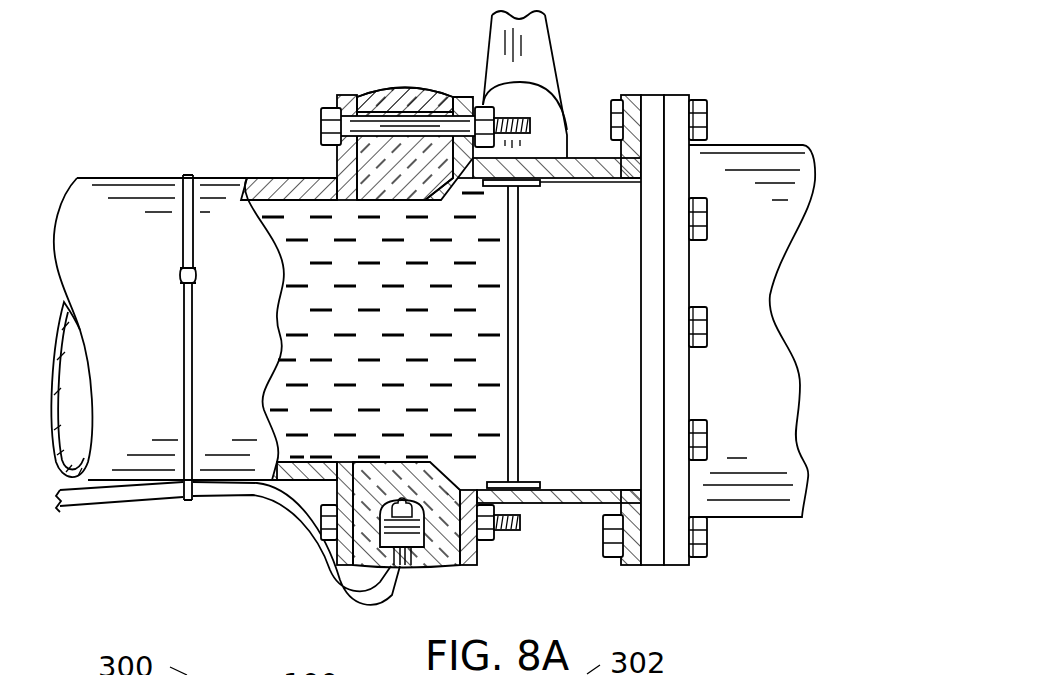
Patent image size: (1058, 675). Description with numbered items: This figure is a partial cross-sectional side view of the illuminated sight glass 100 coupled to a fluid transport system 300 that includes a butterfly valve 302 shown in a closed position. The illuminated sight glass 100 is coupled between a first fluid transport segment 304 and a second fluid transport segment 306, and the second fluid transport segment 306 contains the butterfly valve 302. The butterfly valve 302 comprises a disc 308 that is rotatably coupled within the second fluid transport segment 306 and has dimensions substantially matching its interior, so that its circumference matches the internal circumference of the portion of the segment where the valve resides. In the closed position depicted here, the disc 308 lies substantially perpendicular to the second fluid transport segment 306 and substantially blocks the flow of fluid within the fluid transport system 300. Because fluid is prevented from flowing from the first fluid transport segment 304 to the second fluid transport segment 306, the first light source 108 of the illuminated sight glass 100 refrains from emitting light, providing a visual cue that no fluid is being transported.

The fluid transport system 300 is at (242, 82).
The illuminated sight glass 100 is at (383, 83).
The first fluid transport segment 304 is at (300, 172).
The butterfly valve 302 is at (548, 55).
The second fluid transport segment 306 is at (533, 158).
The disc 308 is at (517, 327).
The first light source 108 is at (402, 518).